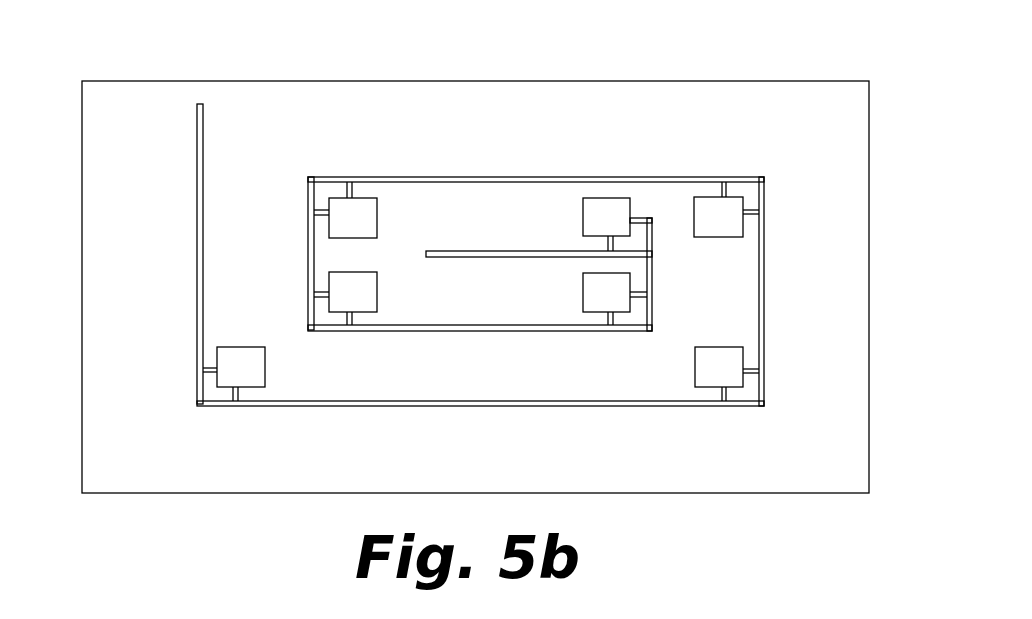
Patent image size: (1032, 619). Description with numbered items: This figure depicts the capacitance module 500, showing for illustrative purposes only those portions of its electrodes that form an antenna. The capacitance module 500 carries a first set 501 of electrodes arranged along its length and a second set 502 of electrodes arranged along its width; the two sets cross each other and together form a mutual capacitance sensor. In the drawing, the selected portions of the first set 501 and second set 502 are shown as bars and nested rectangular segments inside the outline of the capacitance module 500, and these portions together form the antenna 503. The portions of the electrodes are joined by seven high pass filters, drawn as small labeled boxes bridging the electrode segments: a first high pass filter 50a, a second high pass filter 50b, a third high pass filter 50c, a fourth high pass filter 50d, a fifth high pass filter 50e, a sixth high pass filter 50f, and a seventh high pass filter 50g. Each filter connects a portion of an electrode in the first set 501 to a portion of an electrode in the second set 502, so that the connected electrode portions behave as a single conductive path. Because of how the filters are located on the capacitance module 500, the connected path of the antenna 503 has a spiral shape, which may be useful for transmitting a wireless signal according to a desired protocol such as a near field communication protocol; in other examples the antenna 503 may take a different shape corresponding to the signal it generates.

The capacitance module 500 is at (851, 73).
The first set of electrodes 501 is at (218, 407).
The second set of electrodes 502 is at (198, 102).
The antenna 503 is at (782, 282).
The first high pass filter 50a is at (234, 374).
The second high pass filter 50b is at (345, 298).
The third high pass filter 50c is at (345, 210).
The fourth high pass filter 50d is at (606, 224).
The fifth high pass filter 50e is at (615, 299).
The sixth high pass filter 50f is at (726, 209).
The seventh high pass filter 50g is at (727, 374).